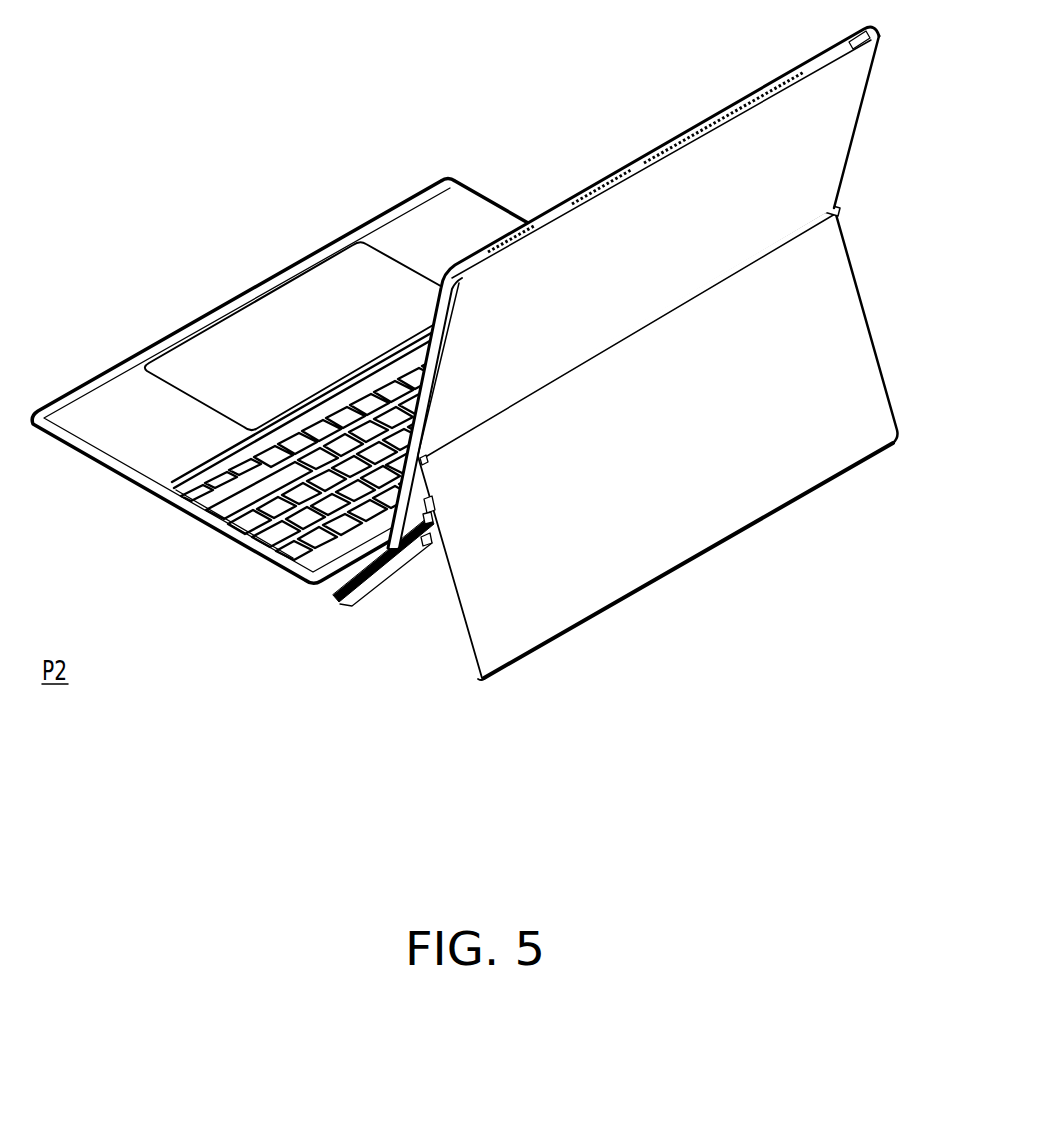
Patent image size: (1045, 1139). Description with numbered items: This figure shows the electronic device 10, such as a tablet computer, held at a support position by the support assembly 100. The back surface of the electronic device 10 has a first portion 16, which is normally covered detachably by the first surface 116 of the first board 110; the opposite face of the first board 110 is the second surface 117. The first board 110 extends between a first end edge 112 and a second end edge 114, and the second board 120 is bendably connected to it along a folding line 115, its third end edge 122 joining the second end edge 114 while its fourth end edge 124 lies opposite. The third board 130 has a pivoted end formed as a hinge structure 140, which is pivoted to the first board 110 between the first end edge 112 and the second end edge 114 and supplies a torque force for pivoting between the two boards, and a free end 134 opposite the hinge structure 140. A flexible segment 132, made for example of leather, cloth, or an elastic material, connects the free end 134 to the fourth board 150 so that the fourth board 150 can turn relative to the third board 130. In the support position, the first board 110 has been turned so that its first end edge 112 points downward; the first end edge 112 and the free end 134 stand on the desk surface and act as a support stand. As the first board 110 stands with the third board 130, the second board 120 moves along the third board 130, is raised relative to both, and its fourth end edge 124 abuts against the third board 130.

The support assembly 100 is at (490, 360).
The electronic device 10 is at (667, 278).
The first portion 16 is at (834, 147).
The first board 110 is at (682, 447).
The first end edge 112 is at (840, 478).
The second end edge 114 is at (838, 221).
The folding line 115 is at (750, 263).
The first surface 116 is at (930, 327).
The second surface 117 is at (450, 680).
The second board 120 is at (428, 502).
The third end edge 122 is at (423, 462).
The fourth end edge 124 is at (421, 540).
The third board 130 is at (364, 578).
The flexible segment 132 is at (331, 590).
The free end 134 is at (463, 648).
The hinge structure 140 is at (424, 515).
The fourth board 150 is at (160, 498).